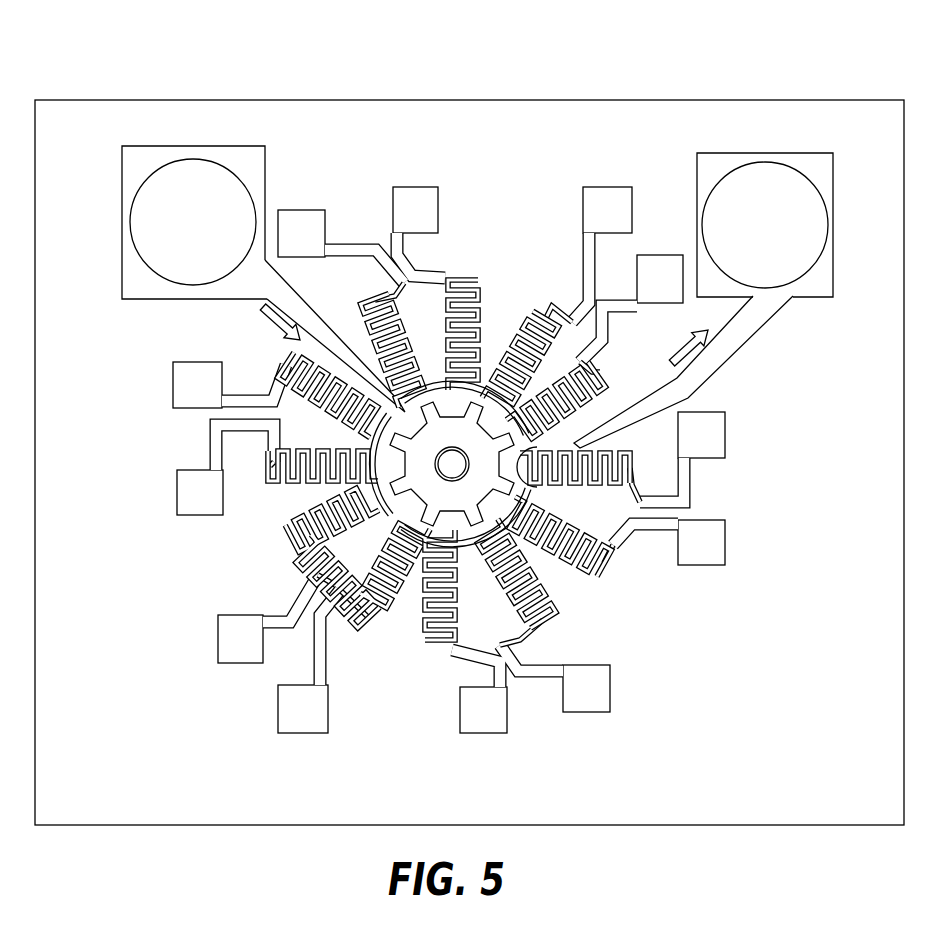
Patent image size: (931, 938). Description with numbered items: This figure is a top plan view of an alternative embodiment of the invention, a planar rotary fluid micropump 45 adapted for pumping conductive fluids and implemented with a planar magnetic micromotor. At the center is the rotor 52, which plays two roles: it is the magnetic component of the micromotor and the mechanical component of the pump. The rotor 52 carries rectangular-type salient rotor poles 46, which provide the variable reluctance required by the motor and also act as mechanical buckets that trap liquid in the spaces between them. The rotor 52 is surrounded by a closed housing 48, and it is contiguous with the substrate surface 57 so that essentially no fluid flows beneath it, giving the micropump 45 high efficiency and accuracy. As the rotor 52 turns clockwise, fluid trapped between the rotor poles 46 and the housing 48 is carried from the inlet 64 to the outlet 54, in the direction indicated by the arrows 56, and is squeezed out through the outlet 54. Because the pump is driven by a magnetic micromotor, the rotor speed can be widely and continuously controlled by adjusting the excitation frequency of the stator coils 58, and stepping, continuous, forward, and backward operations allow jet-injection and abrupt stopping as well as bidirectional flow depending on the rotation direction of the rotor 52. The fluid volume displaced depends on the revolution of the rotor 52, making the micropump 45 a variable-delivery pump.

The micropump 45 is at (566, 70).
The substrate surface 57 is at (842, 122).
The arrows 56 is at (266, 314).
The rotor poles 46 is at (472, 396).
The inlet 64 is at (410, 448).
The housing 48 is at (378, 476).
The stator coils 58 is at (298, 513).
The outlet 54 is at (533, 497).
The rotor 52 is at (508, 540).